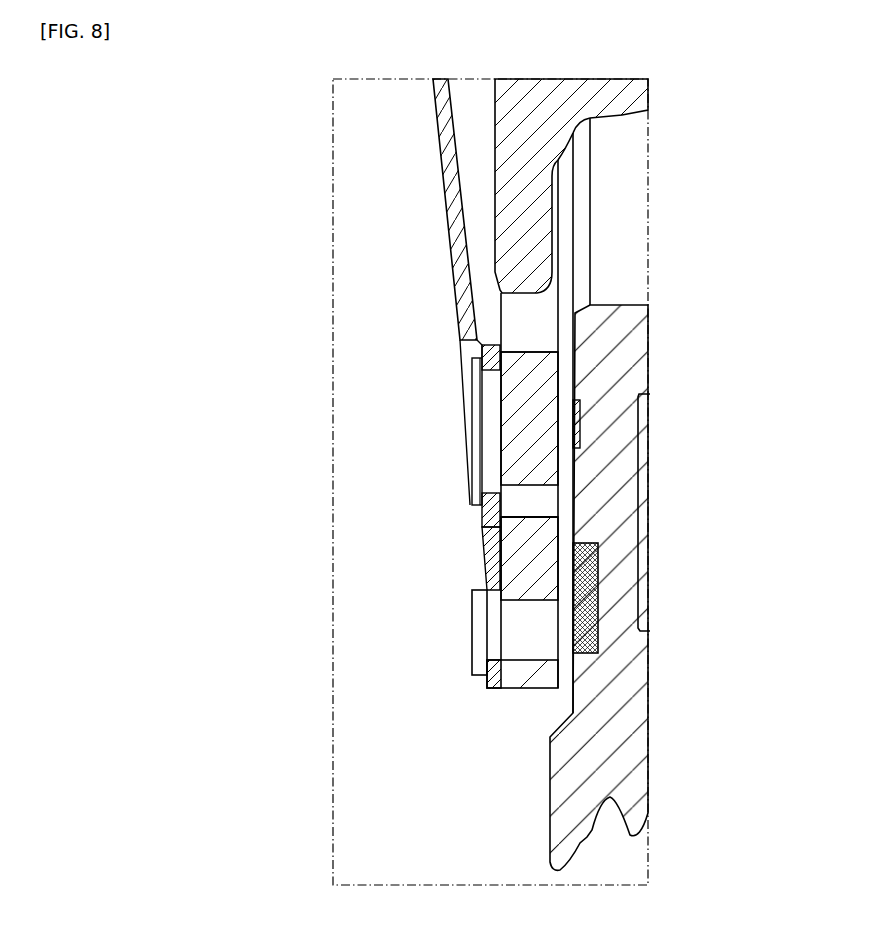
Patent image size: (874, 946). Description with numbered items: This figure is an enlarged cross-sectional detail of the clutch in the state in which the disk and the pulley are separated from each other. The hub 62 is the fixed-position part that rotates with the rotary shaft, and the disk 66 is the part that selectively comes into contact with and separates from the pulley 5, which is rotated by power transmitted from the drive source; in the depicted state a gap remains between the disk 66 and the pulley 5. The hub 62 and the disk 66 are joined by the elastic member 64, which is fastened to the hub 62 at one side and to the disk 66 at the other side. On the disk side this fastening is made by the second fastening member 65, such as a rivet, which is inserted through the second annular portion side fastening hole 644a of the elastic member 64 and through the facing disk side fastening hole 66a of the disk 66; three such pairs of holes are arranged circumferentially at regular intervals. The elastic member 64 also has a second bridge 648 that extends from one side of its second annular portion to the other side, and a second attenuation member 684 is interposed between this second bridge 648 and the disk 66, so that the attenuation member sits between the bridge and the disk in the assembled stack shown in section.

The hub 62 is at (607, 96).
The elastic member 64 is at (433, 153).
The second attenuation member 684 is at (495, 426).
The second bridge 648 is at (500, 503).
The second annular portion side fastening hole 644a is at (505, 612).
The second fastening member 65 is at (462, 638).
The disk side fastening hole 66a is at (525, 652).
The disk 66 is at (522, 698).
The pulley 5 is at (623, 735).